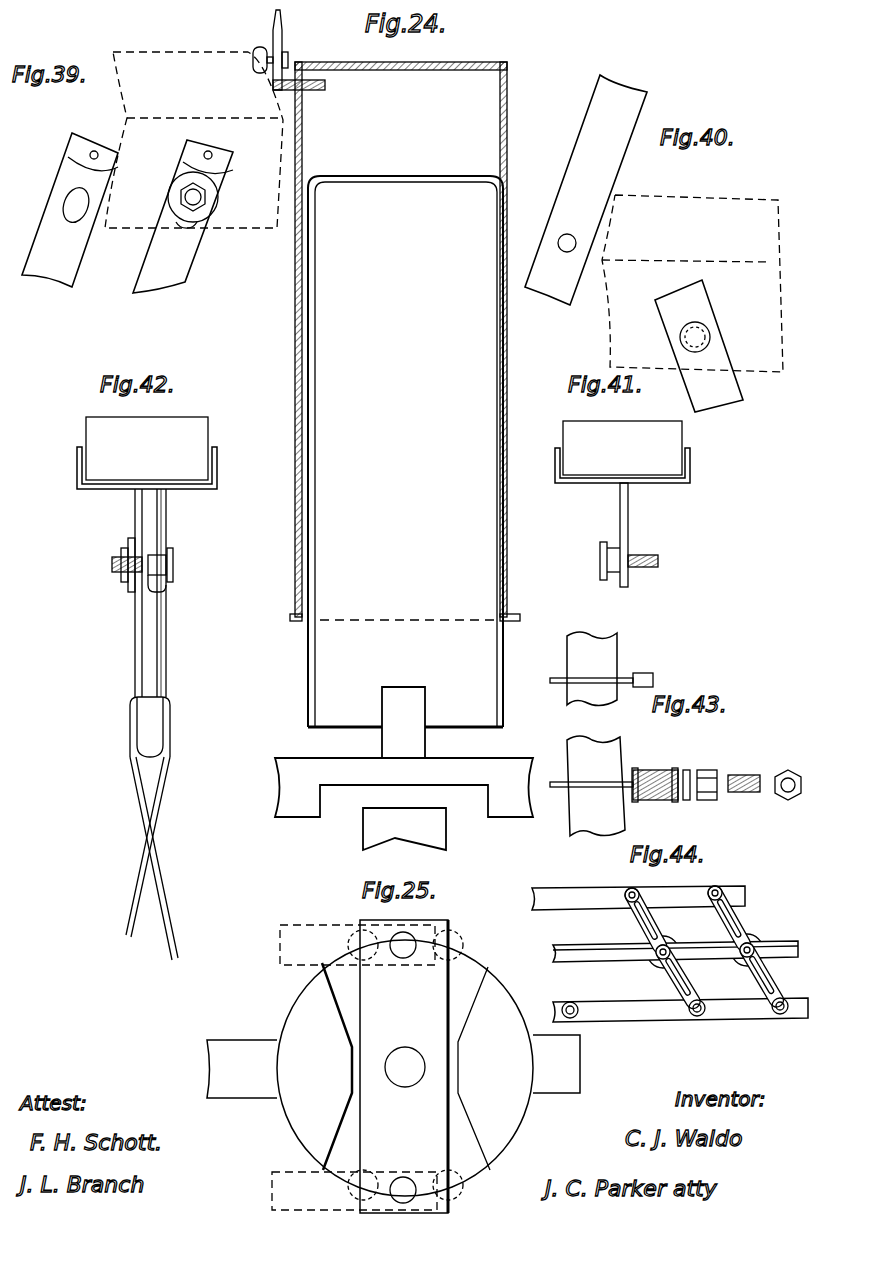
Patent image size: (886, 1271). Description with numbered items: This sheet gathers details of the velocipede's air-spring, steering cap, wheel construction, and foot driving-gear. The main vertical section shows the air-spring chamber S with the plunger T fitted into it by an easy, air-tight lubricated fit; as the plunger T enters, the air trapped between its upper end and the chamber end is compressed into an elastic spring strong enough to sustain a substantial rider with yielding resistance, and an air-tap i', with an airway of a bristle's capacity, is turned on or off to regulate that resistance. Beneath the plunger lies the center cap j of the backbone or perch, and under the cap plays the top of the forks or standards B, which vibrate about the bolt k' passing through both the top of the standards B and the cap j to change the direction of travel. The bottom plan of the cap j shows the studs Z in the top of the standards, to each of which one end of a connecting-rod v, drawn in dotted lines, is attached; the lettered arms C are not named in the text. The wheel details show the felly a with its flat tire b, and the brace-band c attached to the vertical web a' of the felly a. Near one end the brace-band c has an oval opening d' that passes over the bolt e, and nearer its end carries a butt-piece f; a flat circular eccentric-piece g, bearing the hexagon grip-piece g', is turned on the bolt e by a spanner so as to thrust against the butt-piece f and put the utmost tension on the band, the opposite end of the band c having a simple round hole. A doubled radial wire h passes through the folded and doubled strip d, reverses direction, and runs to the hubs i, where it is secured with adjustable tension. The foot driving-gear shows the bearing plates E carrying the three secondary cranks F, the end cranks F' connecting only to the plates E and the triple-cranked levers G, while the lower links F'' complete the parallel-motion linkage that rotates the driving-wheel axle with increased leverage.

In FIG. 24, the air-spring chamber S is at (405, 341).
In FIG. 24, the plunger T is at (405, 451).
In FIG. 24, the hub i is at (267, 50).
In FIG. 43, the hub i is at (596, 734).
In FIG. 24, the air-tap i' is at (304, 98).
In FIG. 24, the bolt k' is at (403, 722).
In FIG. 25, the bolt k' is at (398, 1060).
In FIG. 24, the center cap j is at (404, 787).
In FIG. 25, the center cap j is at (405, 1068).
In FIG. 24, the standard B is at (368, 830).
In FIG. 25, the standard B is at (380, 1152).
In FIG. 39, the felly a is at (194, 140).
In FIG. 40, the felly a is at (692, 283).
In FIG. 41, the felly a is at (611, 465).
In FIG. 42, the felly a is at (161, 463).
In FIG. 39, the web of the felly a' is at (161, 153).
In FIG. 40, the web of the felly a' is at (689, 344).
In FIG. 41, the web of the felly a' is at (610, 535).
In FIG. 42, the web of the felly a' is at (171, 593).
In FIG. 41, the tire b is at (622, 448).
In FIG. 42, the tire b is at (147, 448).
In FIG. 39, the brace-band c is at (127, 213).
In FIG. 40, the brace-band c is at (620, 237).
In FIG. 42, the brace-band c is at (132, 592).
In FIG. 42, the doubled strip d is at (146, 593).
In FIG. 39, the oval opening d' is at (100, 205).
In FIG. 39, the bolt e is at (186, 192).
In FIG. 40, the bolt e is at (685, 337).
In FIG. 41, the bolt e is at (660, 560).
In FIG. 42, the bolt e is at (112, 565).
In FIG. 39, the butt-piece f is at (92, 152).
In FIG. 39, the eccentric-piece g is at (210, 197).
In FIG. 42, the eccentric-piece g is at (115, 557).
In FIG. 39, the grip-piece g' is at (216, 216).
In FIG. 42, the grip-piece g' is at (110, 571).
In FIG. 42, the radial wire h is at (120, 918).
In FIG. 43, the radial wire h is at (665, 737).
In FIG. 25, the connecting-rod v is at (357, 1067).
In FIG. 25, the arm C is at (238, 1048).
In FIG. 25, the stud Z is at (403, 1067).
In FIG. 44, the triple-cranked lever G is at (670, 954).
In FIG. 44, the bearing plate E is at (582, 962).
In FIG. 44, the secondary crank F is at (648, 921).
In FIG. 44, the end crank F' is at (736, 918).
In FIG. 44, the lower link F'' is at (713, 975).